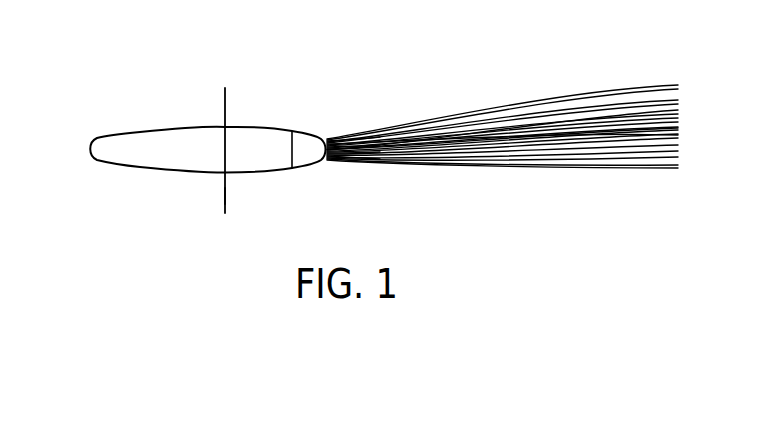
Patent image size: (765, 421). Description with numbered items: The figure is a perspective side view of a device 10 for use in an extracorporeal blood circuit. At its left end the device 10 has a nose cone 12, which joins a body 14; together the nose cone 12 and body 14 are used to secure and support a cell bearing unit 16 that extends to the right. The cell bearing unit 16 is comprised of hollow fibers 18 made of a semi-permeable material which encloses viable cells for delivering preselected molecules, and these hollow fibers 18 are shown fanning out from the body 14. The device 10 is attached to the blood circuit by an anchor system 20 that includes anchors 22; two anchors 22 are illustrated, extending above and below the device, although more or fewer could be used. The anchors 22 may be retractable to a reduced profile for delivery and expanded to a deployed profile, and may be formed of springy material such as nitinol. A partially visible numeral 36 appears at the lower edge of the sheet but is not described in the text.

The device 10 is at (111, 36).
The nose cone 12 is at (222, 112).
The body 14 is at (320, 112).
The cell bearing unit 16 is at (680, 192).
The hollow fibers 18 is at (598, 123).
The anchor system 20 is at (214, 196).
The anchors 22 is at (224, 92).
The partial numeral 36 is at (701, 414).